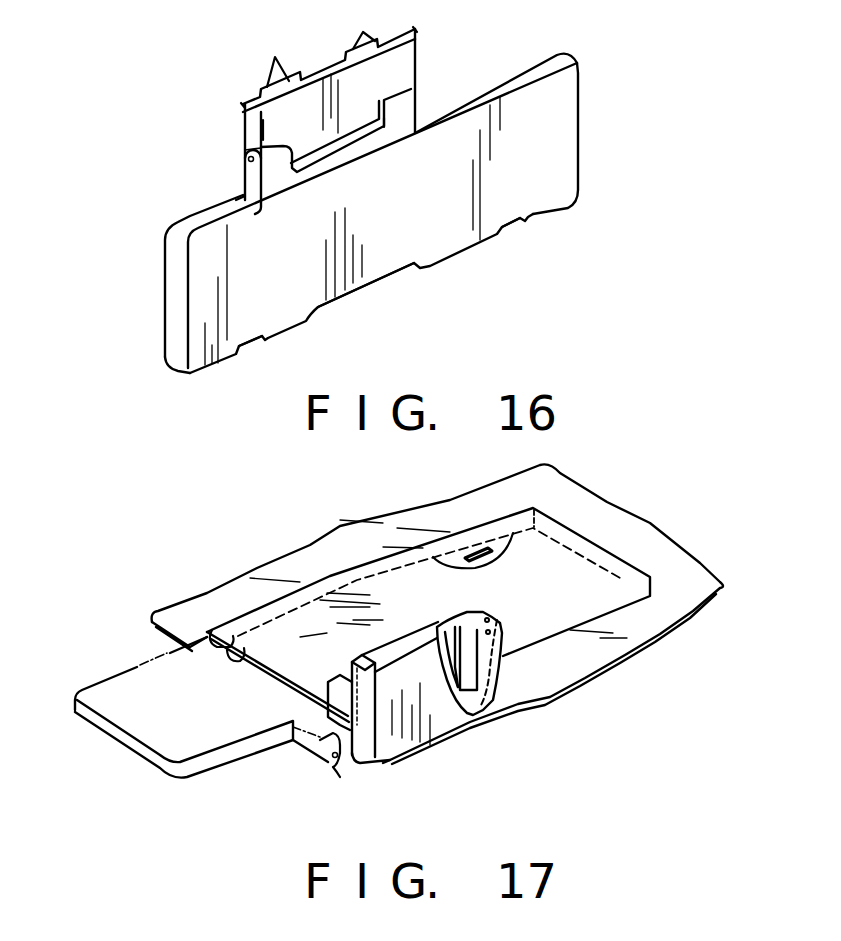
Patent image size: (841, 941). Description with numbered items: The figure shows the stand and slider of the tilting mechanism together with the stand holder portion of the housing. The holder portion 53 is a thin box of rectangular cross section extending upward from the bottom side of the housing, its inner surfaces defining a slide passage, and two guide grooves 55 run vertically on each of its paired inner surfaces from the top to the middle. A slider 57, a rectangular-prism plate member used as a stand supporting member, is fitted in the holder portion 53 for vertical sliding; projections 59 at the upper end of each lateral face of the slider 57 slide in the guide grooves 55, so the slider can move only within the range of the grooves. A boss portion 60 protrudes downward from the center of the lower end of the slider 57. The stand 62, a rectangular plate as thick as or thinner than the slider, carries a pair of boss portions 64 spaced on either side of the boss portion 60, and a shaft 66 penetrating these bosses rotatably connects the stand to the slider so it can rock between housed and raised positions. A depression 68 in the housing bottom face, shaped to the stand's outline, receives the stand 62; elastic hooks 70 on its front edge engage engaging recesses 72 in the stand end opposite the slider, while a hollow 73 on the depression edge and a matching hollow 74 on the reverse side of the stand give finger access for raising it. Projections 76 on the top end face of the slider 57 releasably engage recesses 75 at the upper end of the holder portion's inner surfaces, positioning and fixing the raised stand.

In FIG. 17, the holder portion 53 is at (508, 703).
In FIG. 17, the guide grooves 55 is at (450, 612).
In FIG. 16, the slider 57 is at (400, 68).
In FIG. 16, the projections 59 is at (275, 80).
In FIG. 16, the boss portion 60 is at (313, 141).
In FIG. 16, the stand 62 is at (557, 163).
In FIG. 17, the stand 62 is at (157, 740).
In FIG. 16, the boss portions 64 is at (243, 183).
In FIG. 16, the shaft 66 is at (245, 158).
In FIG. 17, the shaft 66 is at (337, 766).
In FIG. 17, the depression 68 is at (222, 638).
In FIG. 17, the elastic hooks 70 is at (473, 547).
In FIG. 16, the engaging recesses 72 is at (250, 348).
In FIG. 17, the hollow 73 is at (332, 573).
In FIG. 16, the hollow 74 is at (363, 287).
In FIG. 17, the recesses 75 is at (500, 620).
In FIG. 16, the projections 76 is at (243, 105).